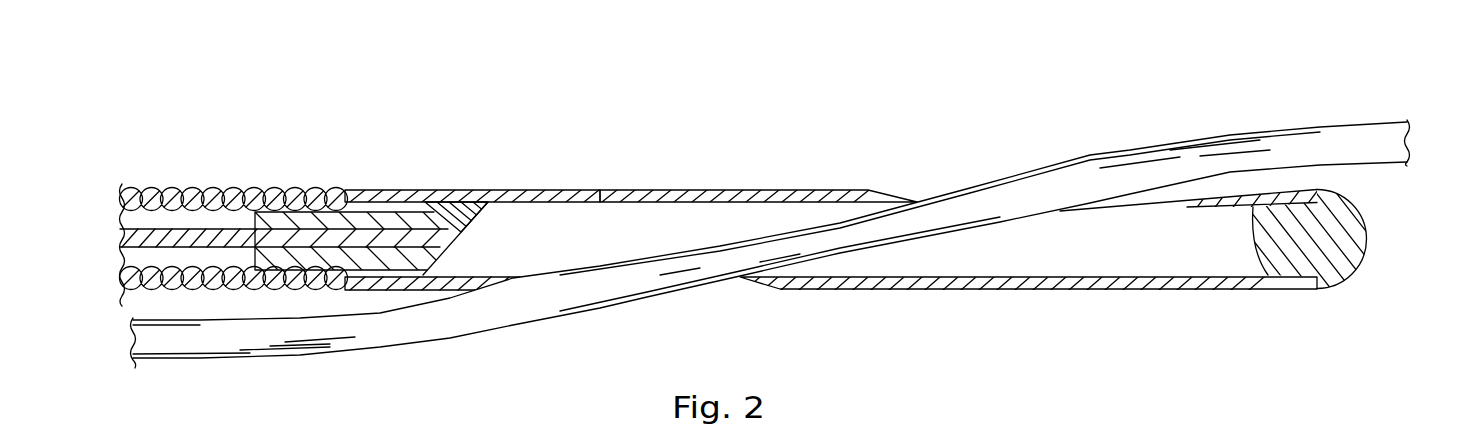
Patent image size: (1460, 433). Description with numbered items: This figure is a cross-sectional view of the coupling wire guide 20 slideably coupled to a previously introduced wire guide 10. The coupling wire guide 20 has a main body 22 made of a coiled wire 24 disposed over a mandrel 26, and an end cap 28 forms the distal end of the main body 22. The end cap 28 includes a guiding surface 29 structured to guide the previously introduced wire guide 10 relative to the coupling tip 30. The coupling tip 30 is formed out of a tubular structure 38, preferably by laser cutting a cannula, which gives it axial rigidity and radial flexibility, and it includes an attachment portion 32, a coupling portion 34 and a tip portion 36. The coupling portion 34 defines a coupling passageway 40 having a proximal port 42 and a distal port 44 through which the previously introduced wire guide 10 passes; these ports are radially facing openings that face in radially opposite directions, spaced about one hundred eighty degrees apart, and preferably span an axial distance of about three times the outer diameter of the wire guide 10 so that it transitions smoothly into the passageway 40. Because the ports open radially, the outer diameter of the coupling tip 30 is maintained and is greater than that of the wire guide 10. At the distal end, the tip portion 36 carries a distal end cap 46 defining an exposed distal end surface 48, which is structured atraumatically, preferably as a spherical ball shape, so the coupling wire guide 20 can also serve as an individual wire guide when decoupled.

The previously introduced wire guide 10 is at (383, 328).
The coupling wire guide 20 is at (316, 78).
The main body 22 is at (150, 186).
The coiled wire 24 is at (212, 186).
The mandrel 26 is at (292, 235).
The end cap 28 is at (475, 213).
The guiding surface 29 is at (483, 222).
The coupling tip 30 is at (672, 165).
The attachment portion 32 is at (402, 188).
The coupling portion 34 is at (762, 188).
The tip portion 36 is at (1287, 200).
The tubular structure 38 is at (1070, 290).
The coupling passageway 40 is at (896, 278).
The proximal port 42 is at (515, 274).
The distal port 44 is at (1142, 202).
The distal end cap 46 is at (1340, 289).
The exposed distal end surface 48 is at (1370, 243).